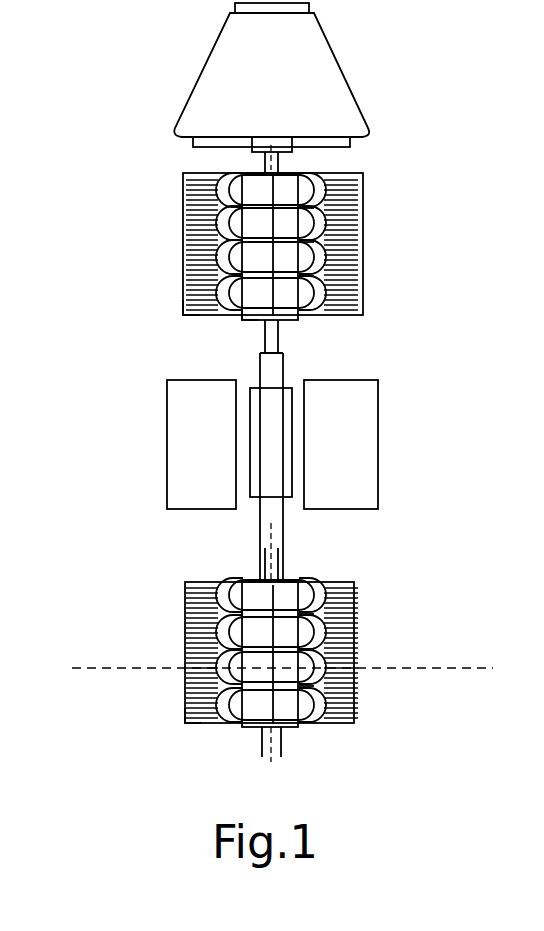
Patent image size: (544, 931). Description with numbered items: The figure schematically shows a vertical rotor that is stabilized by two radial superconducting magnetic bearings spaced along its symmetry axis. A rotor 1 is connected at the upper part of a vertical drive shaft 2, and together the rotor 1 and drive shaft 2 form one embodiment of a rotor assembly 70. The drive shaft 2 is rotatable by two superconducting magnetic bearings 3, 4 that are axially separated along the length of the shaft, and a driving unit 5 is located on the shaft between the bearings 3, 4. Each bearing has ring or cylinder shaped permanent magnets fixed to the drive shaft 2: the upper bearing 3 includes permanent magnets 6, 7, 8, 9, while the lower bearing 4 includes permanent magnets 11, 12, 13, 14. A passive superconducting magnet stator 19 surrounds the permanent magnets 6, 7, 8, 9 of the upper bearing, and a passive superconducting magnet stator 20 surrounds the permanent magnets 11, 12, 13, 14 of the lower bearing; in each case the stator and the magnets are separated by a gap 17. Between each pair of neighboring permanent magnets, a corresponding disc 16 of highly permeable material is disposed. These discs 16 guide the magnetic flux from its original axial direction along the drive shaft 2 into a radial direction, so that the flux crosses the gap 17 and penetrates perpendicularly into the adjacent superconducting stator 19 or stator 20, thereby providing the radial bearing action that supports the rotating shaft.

The rotor 1 is at (373, 57).
The rotor assembly 70 is at (150, 140).
The drive shaft 2 is at (277, 367).
The superconducting magnetic bearing 3 is at (186, 233).
The superconducting magnetic bearing 4 is at (184, 657).
The driving unit 5 is at (182, 449).
The permanent magnet 6 is at (300, 178).
The permanent magnet 7 is at (296, 222).
The permanent magnet 8 is at (297, 262).
The permanent magnet 9 is at (296, 298).
The permanent magnet 11 is at (292, 590).
The permanent magnet 12 is at (292, 632).
The permanent magnet 13 is at (290, 672).
The permanent magnet 14 is at (290, 705).
The disc 16 is at (222, 196).
The gap 17 is at (243, 315).
The passive superconducting magnet stator 19 is at (192, 307).
The passive superconducting magnet stator 20 is at (197, 712).